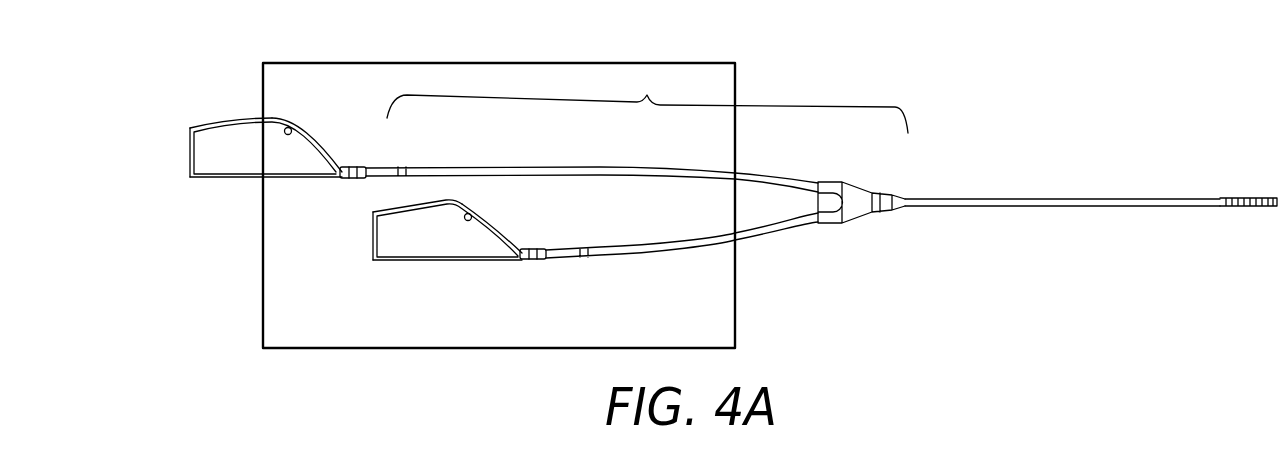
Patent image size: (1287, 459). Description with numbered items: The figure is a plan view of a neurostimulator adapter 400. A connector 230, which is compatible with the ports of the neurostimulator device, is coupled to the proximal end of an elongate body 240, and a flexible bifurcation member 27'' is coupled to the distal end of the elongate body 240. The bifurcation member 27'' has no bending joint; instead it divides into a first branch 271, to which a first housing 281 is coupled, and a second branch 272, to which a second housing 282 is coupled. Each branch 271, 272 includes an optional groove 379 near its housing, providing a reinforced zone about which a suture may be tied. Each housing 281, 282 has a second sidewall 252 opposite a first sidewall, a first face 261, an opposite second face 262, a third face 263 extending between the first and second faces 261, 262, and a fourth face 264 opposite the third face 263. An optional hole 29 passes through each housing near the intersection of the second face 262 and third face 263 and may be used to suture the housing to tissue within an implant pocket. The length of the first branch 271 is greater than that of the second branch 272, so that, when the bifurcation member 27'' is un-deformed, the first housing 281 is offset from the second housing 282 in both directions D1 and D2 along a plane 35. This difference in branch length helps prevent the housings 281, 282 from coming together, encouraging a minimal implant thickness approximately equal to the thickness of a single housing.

The neurostimulator adapter 400 is at (882, 63).
The plane 35 is at (702, 72).
The flexible bifurcation member 27'' is at (647, 80).
The first housing 281 is at (182, 115).
The second housing 282 is at (360, 275).
The second sidewall 252 is at (253, 162).
The first face 261 is at (188, 153).
The second face 262 is at (318, 133).
The third face 263 is at (253, 117).
The fourth face 264 is at (243, 182).
The hole 29 is at (291, 127).
The groove 379 is at (358, 166).
The first branch 271 is at (585, 166).
The second branch 272 is at (627, 255).
The elongate body 240 is at (1052, 207).
The connector 230 is at (1277, 212).
The direction D1 is at (518, 190).
The direction D2 is at (340, 188).